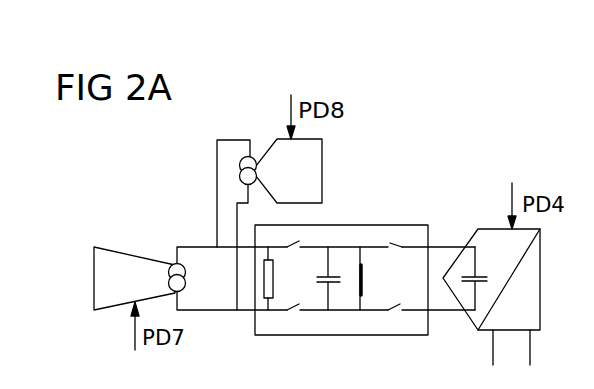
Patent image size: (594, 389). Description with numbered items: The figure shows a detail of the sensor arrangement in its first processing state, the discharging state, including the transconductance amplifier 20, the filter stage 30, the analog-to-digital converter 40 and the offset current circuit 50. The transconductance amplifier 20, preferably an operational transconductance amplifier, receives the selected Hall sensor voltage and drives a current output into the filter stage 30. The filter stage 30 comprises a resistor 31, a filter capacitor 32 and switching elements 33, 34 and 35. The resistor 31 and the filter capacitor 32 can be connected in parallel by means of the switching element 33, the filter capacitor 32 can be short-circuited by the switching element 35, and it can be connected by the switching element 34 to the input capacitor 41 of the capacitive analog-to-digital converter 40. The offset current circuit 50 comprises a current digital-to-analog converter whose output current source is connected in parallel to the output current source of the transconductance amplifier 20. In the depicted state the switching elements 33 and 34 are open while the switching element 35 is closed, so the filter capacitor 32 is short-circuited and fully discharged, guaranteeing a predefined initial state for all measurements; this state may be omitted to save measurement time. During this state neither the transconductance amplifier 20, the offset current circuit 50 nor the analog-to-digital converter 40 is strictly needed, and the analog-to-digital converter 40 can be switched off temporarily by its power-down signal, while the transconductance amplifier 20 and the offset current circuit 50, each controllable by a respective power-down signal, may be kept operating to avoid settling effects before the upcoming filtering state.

The transconductance amplifier 20 is at (130, 252).
The filter stage 30 is at (350, 335).
The resistor 31 is at (273, 276).
The filter capacitor 32 is at (332, 273).
The switching element 33 is at (298, 245).
The switching element 34 is at (395, 252).
The switching element 35 is at (363, 272).
The analog-to-digital converter 40 is at (540, 237).
The input capacitor 41 is at (477, 275).
The offset current circuit 50 is at (322, 145).